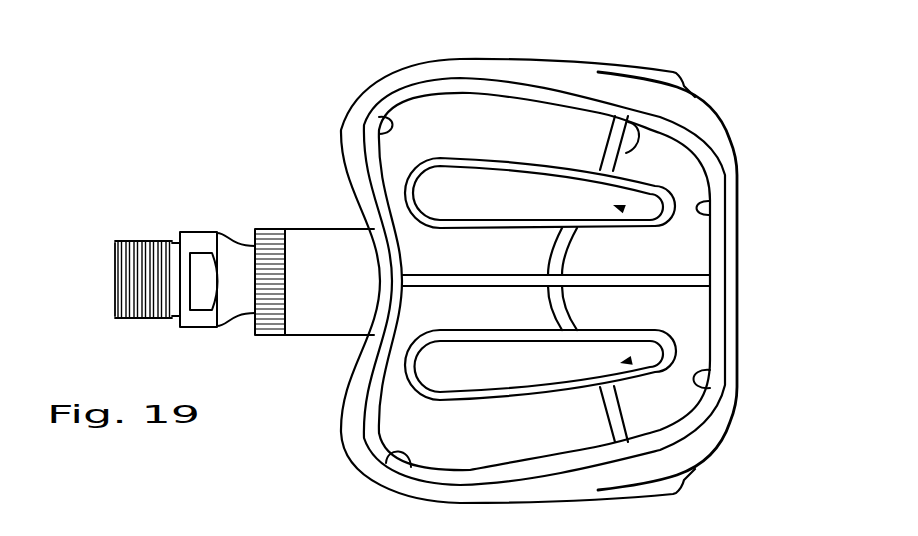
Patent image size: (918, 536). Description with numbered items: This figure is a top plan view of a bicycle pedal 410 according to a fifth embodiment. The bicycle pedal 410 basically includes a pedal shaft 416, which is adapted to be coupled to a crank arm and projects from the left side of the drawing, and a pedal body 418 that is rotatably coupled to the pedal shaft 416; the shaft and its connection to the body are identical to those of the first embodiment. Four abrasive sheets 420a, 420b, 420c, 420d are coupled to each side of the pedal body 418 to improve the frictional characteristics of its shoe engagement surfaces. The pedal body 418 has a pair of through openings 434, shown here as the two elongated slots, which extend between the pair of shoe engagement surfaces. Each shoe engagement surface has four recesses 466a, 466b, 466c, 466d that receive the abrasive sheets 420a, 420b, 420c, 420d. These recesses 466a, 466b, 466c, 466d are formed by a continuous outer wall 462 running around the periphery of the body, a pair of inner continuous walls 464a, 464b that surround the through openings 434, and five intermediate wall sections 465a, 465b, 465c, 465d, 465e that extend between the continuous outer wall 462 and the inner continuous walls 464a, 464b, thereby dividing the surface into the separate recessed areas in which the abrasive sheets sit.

The bicycle pedal 410 is at (340, 51).
The pedal shaft 416 is at (187, 218).
The pedal body 418 is at (714, 93).
The abrasive sheet 420a is at (480, 117).
The abrasive sheet 420b is at (667, 153).
The abrasive sheet 420c is at (672, 412).
The abrasive sheet 420d is at (410, 425).
The through opening 434 is at (622, 209).
The continuous outer wall 462 is at (725, 173).
The inner continuous wall 464a is at (415, 182).
The inner continuous wall 464b is at (463, 341).
The intermediate wall section 465a is at (425, 272).
The intermediate wall section 465b is at (567, 252).
The intermediate wall section 465c is at (567, 308).
The intermediate wall section 465d is at (636, 118).
The intermediate wall section 465e is at (607, 414).
The recess 466a is at (380, 133).
The recess 466b is at (702, 207).
The recess 466c is at (696, 374).
The recess 466d is at (392, 458).